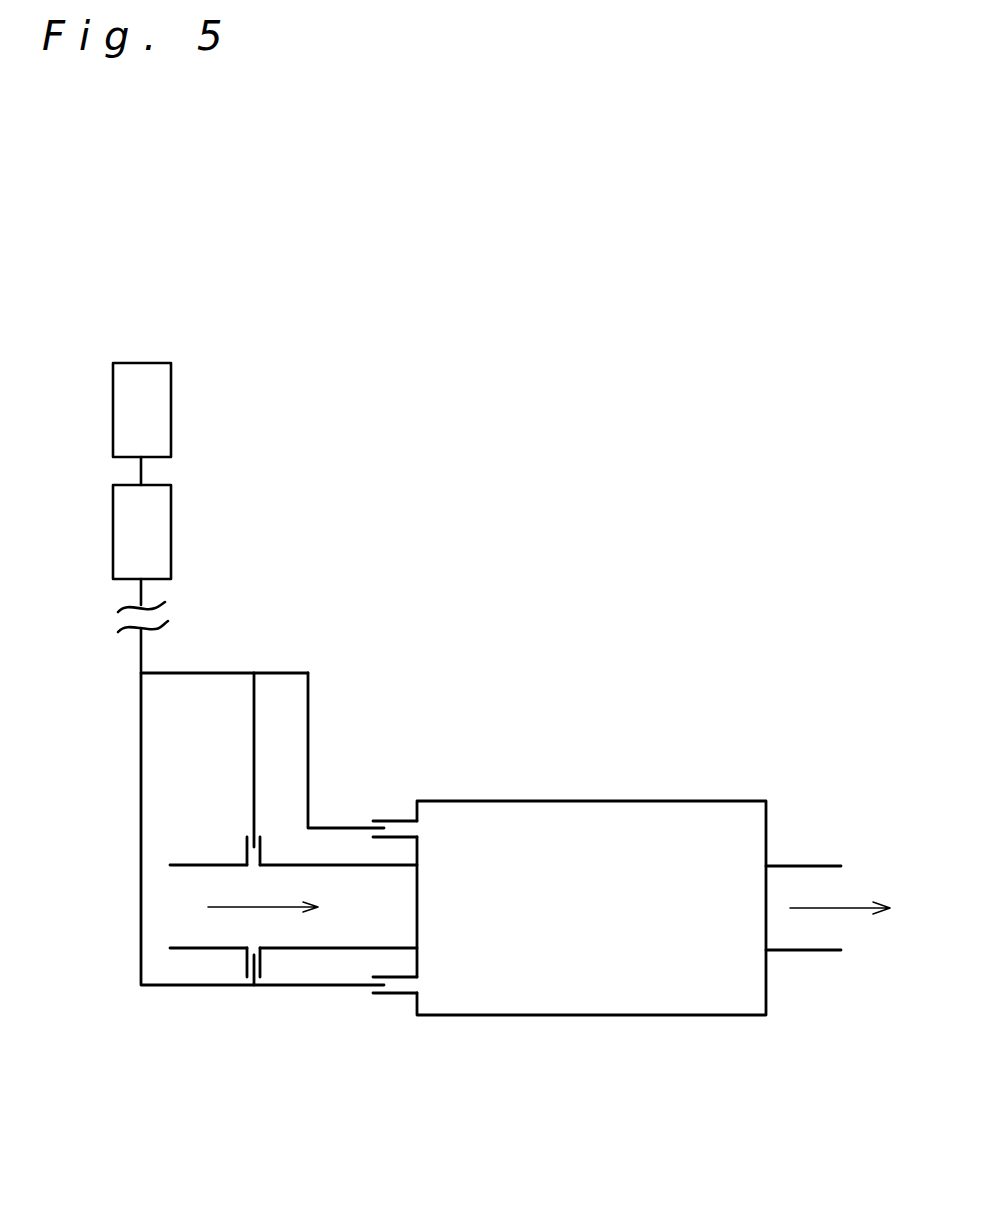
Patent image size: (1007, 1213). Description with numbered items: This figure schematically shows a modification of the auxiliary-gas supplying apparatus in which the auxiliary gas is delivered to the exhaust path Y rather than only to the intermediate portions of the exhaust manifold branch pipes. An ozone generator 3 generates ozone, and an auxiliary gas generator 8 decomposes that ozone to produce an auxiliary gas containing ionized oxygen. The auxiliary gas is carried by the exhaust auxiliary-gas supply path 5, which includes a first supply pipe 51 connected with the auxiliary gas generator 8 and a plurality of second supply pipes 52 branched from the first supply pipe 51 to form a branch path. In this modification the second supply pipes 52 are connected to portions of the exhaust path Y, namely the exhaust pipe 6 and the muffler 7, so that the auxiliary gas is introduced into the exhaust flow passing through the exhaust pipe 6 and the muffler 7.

The ozone generator 3 is at (162, 408).
The auxiliary gas generator 8 is at (158, 538).
The first supply pipe 51 is at (141, 651).
The exhaust auxiliary-gas supply path 5 is at (110, 960).
The exhaust pipe 6 is at (313, 950).
The second supply pipes 52 is at (253, 735).
The exhaust path Y is at (232, 910).
The muffler 7 is at (525, 1015).